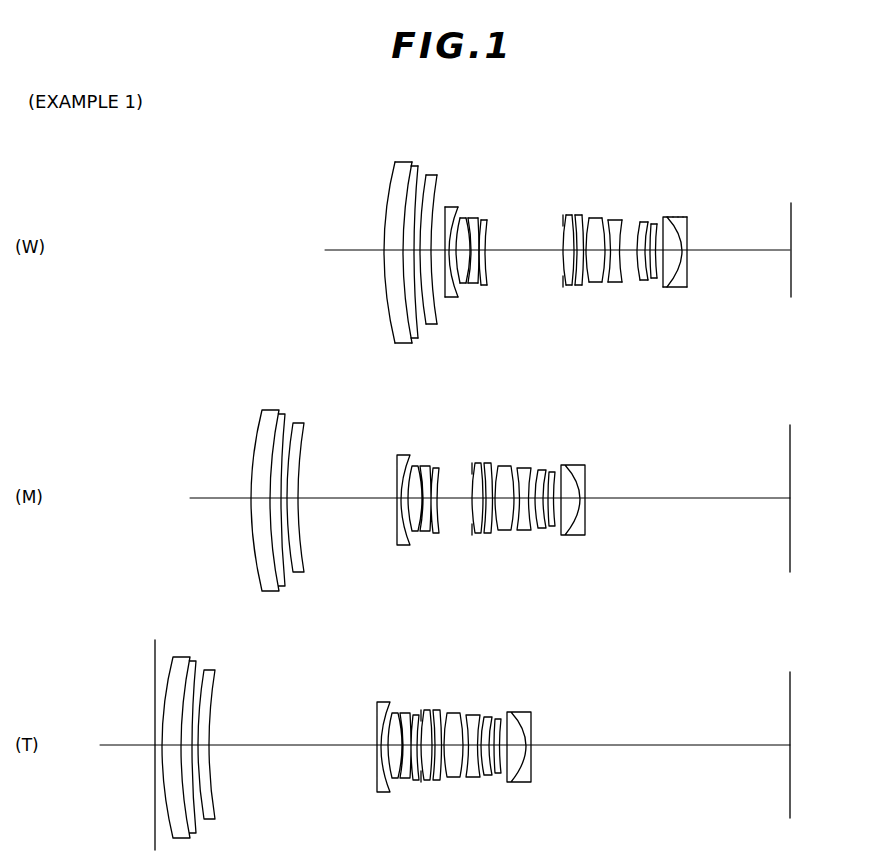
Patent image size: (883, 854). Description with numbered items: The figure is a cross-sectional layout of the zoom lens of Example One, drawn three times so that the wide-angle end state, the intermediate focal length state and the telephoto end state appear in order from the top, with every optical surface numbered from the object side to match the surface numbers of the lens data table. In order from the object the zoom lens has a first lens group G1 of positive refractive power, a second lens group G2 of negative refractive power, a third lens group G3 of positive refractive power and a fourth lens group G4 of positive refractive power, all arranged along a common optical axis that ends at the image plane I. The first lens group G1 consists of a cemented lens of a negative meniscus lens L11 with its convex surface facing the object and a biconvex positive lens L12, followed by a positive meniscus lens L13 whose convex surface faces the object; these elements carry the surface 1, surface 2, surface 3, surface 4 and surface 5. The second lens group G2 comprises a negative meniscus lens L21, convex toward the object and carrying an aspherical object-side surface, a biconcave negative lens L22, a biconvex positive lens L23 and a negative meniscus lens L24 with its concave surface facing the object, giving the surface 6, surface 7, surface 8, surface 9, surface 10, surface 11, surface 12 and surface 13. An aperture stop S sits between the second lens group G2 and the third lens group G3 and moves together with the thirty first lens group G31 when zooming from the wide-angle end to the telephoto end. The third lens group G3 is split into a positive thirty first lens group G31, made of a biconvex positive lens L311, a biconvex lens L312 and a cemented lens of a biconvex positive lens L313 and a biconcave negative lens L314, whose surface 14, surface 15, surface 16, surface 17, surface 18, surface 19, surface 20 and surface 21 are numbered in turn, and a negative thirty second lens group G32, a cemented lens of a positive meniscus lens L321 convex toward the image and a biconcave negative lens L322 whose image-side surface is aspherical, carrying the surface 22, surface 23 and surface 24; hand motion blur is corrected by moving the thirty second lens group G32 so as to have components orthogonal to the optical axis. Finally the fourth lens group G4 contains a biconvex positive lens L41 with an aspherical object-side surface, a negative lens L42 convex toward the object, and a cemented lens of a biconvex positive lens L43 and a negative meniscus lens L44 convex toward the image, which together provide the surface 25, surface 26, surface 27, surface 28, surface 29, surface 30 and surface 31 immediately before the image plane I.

The lens surface 1 is at (394, 165).
The lens surface 2 is at (411, 164).
The lens surface 3 is at (418, 168).
The lens surface 4 is at (426, 176).
The lens surface 5 is at (437, 176).
The lens surface 6 is at (446, 206).
The lens surface 7 is at (457, 206).
The lens surface 8 is at (461, 217).
The lens surface 9 is at (467, 217).
The lens surface 10 is at (471, 217).
The lens surface 11 is at (478, 217).
The lens surface 12 is at (482, 219).
The lens surface 13 is at (487, 219).
The lens surface 14 is at (565, 214).
The lens surface 15 is at (572, 214).
The lens surface 16 is at (575, 214).
The lens surface 17 is at (582, 214).
The lens surface 18 is at (589, 217).
The lens surface 19 is at (602, 217).
The lens surface 20 is at (608, 219).
The lens surface 21 is at (622, 219).
The lens surface 22 is at (640, 221).
The lens surface 23 is at (648, 221).
The lens surface 24 is at (657, 223).
The lens surface 25 is at (664, 216).
The lens surface 26 is at (669, 216).
The lens surface 27 is at (674, 216).
The lens surface 28 is at (679, 216).
The lens surface 29 is at (683, 216).
The lens surface 30 is at (686, 216).
The lens surface 31 is at (690, 217).
The aperture stop S is at (563, 288).
The image plane I is at (791, 280).
The negative meniscus lens L11 is at (347, 244).
The biconvex positive lens L12 is at (365, 244).
The positive meniscus lens L13 is at (389, 244).
The negative meniscus lens L21 is at (419, 240).
The biconcave negative lens L22 is at (443, 240).
The biconvex positive lens L23 is at (473, 240).
The negative meniscus lens L24 is at (503, 240).
The biconvex positive lens L311 is at (536, 241).
The biconvex lens L312 is at (557, 241).
The biconvex positive lens L313 is at (590, 241).
The biconcave negative lens L314 is at (626, 241).
The positive meniscus lens L321 is at (664, 241).
The biconcave negative lens L322 is at (680, 241).
The biconvex positive lens L41 is at (702, 275).
The negative lens L42 is at (723, 275).
The biconvex positive lens L43 is at (744, 275).
The negative meniscus lens L44 is at (764, 275).
The first lens group G1 is at (357, 257).
The second lens group G2 is at (457, 253).
The third lens group G3 is at (605, 265).
The thirty first lens group G31 is at (575, 255).
The thirty second lens group G32 is at (674, 256).
The fourth lens group G4 is at (751, 288).